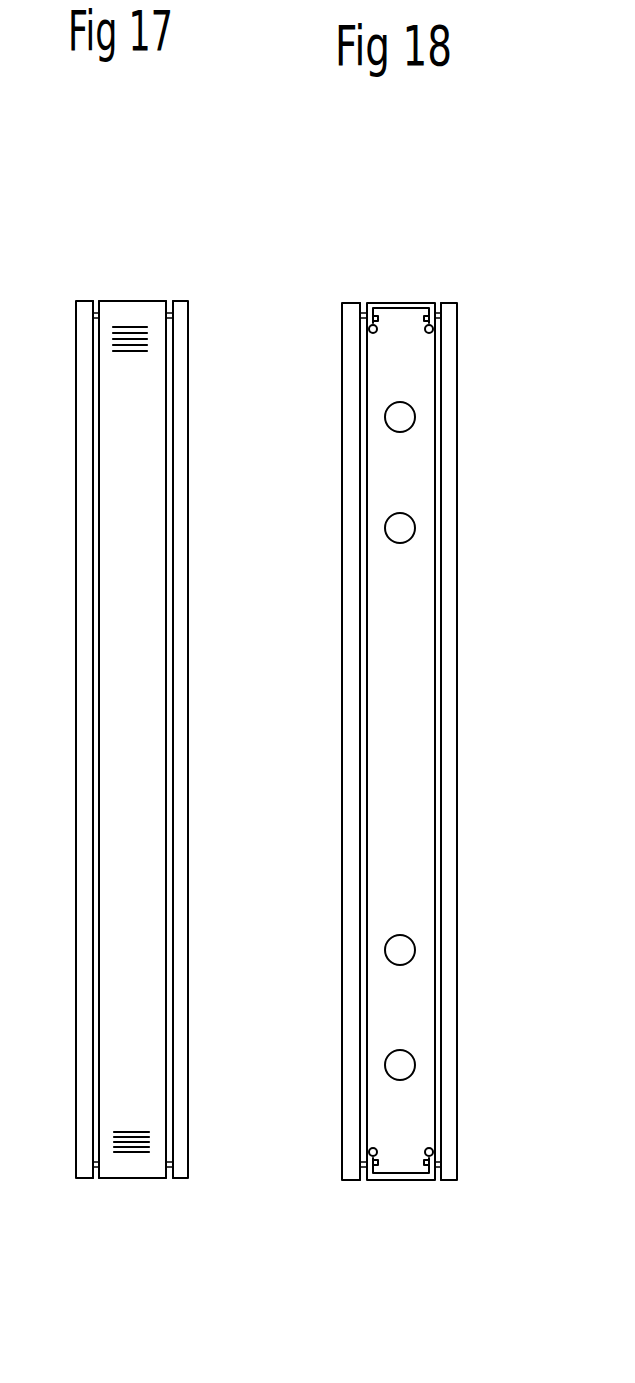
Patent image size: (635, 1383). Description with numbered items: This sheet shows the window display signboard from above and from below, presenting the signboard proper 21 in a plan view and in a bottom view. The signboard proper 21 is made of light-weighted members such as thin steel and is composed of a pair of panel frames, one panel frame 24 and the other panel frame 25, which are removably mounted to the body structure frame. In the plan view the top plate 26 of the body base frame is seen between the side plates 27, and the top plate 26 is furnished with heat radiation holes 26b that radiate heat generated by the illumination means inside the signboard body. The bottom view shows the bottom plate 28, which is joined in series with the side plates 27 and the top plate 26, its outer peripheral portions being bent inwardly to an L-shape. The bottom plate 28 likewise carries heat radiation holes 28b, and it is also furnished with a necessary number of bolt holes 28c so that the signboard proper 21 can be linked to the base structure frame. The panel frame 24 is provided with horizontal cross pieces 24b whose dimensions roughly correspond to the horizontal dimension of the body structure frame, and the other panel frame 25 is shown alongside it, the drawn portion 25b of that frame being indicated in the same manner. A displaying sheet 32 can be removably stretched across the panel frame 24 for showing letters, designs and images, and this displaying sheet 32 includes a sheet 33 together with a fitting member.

In FIG. 17, the signboard proper 21 is at (200, 293).
In FIG. 18, the signboard proper 21 is at (472, 295).
In FIG. 17, the panel frame 24 is at (181, 720).
In FIG. 18, the panel frame 24 is at (447, 588).
In FIG. 17, the horizontal cross pieces 24b is at (181, 641).
In FIG. 18, the horizontal cross pieces 24b is at (450, 676).
In FIG. 17, the panel frame 25 is at (86, 731).
In FIG. 18, the panel frame 25 is at (351, 879).
In FIG. 17, the guide rail groove 25b is at (86, 634).
In FIG. 18, the guide rail groove 25b is at (351, 963).
In FIG. 17, the top plate 26 is at (138, 406).
In FIG. 17, the heat radiation holes 26b is at (142, 340).
In FIG. 17, the side plates 27 is at (115, 300).
In FIG. 18, the bottom plate 28 is at (405, 763).
In FIG. 18, the heat radiation holes 28b is at (403, 951).
In FIG. 18, the bolt holes 28c is at (434, 331).
In FIG. 17, the displaying sheet 32 is at (199, 488).
In FIG. 18, the displaying sheet 32 is at (472, 411).
In FIG. 17, the sheet 33 is at (181, 568).
In FIG. 18, the sheet 33 is at (448, 493).